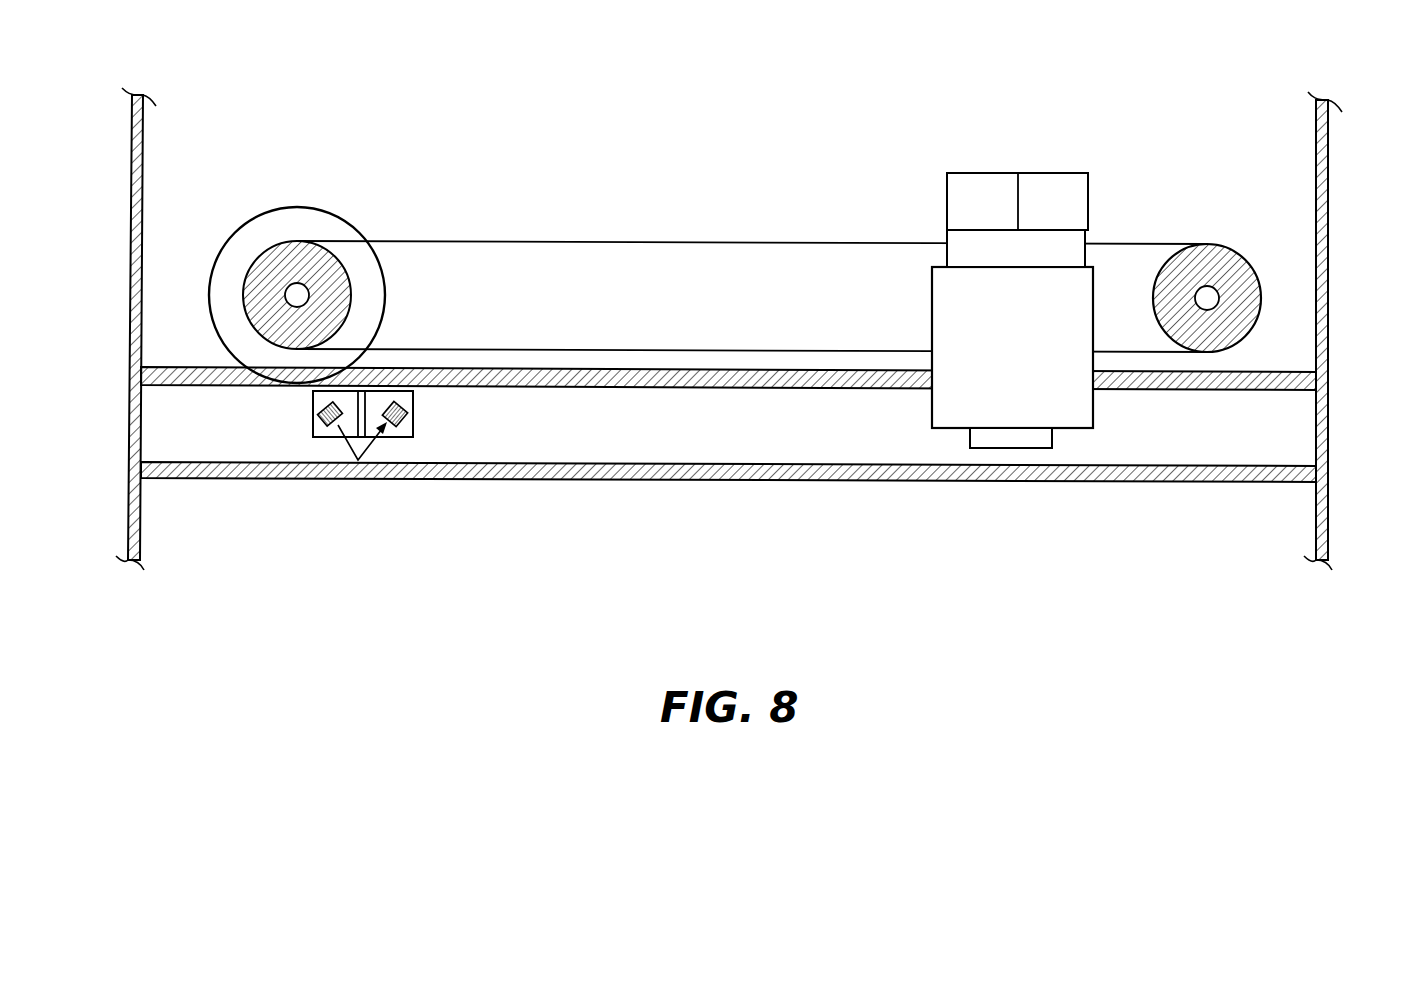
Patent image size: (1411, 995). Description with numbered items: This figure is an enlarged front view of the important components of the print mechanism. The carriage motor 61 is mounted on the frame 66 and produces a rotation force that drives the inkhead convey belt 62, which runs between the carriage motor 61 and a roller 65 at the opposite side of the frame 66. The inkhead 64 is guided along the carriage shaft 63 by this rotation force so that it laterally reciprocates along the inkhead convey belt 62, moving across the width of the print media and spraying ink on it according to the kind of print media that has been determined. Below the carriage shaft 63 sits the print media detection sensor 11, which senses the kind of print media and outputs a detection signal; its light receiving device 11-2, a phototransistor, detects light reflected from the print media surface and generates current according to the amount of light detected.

The print media detection sensor 11 is at (313, 411).
The light receiving device 11-2 is at (322, 428).
The carriage motor 61 is at (293, 209).
The inkhead convey belt 62 is at (468, 242).
The carriage shaft 63 is at (685, 389).
The inkhead 64 is at (1052, 173).
The follower roller 65 is at (1233, 243).
The frame 66 is at (1332, 198).